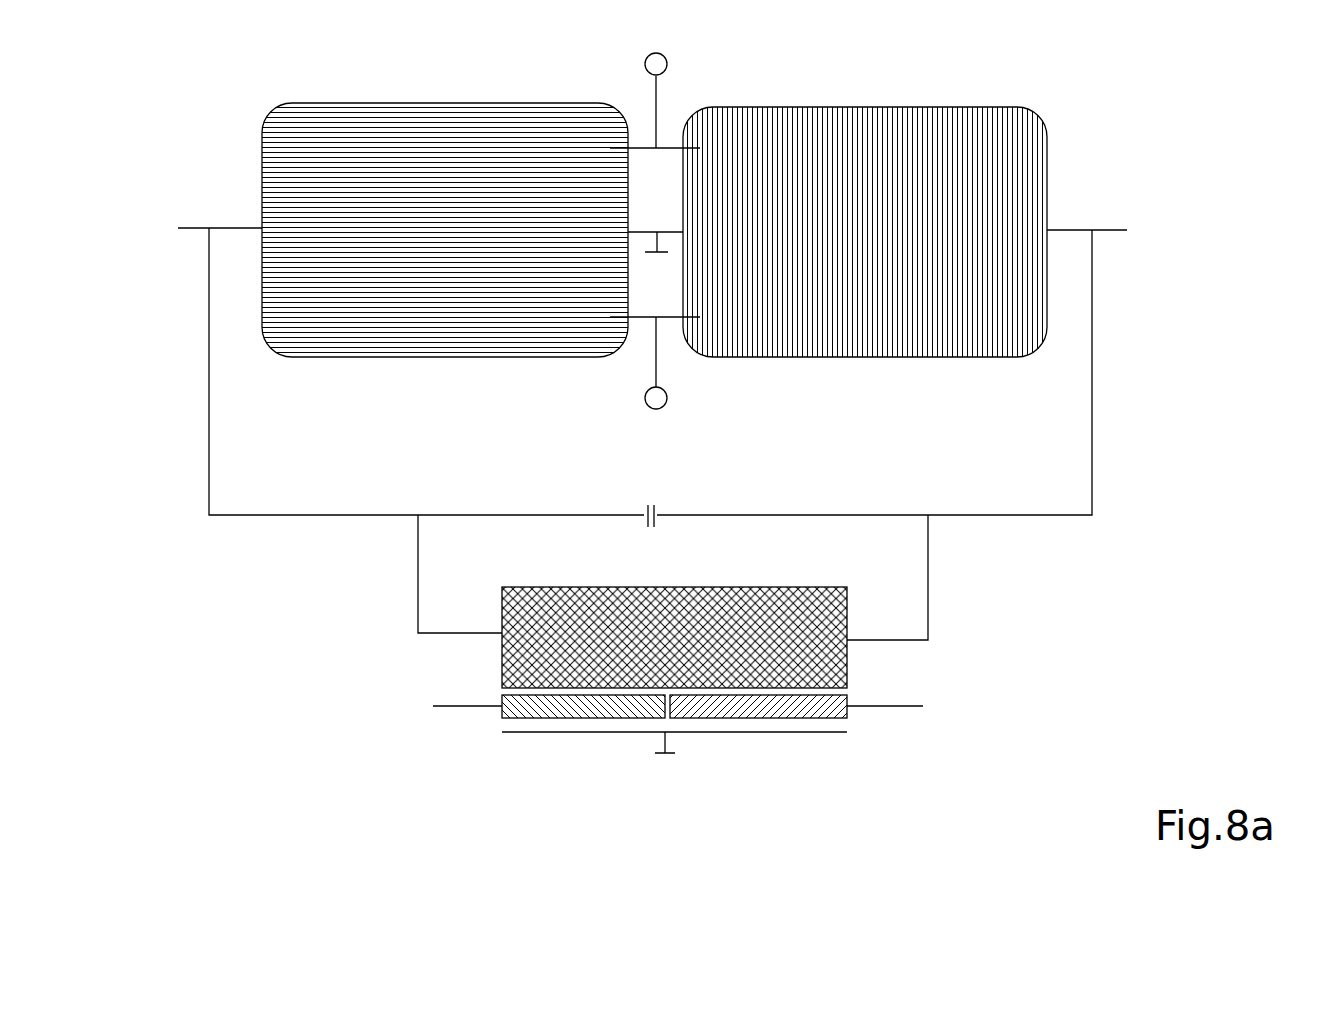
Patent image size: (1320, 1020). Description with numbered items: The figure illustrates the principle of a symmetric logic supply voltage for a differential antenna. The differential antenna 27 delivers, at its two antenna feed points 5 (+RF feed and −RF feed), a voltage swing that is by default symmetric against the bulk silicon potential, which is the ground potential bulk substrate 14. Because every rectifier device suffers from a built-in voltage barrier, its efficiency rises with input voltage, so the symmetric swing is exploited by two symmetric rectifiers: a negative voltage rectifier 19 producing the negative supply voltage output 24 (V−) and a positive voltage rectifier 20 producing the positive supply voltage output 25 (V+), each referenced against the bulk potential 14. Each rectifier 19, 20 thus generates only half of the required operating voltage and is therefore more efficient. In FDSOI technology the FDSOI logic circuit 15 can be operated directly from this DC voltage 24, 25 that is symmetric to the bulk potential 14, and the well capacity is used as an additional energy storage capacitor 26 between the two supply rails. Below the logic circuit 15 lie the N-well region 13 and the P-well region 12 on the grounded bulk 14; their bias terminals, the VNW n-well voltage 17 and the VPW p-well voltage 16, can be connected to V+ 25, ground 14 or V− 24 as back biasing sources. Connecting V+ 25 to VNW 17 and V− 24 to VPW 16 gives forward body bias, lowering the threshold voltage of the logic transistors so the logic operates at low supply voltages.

The antenna feed points 5 is at (648, 68).
The P-well region 12 is at (793, 713).
The N-well region 13 is at (597, 717).
The ground potential bulk substrate 14 is at (657, 240).
The FDSOI logic circuit 15 is at (657, 620).
The VPW p-well voltage 16 is at (906, 701).
The VNW n-well voltage 17 is at (449, 698).
The negative voltage rectifier 19 is at (440, 237).
The positive voltage rectifier 20 is at (993, 248).
The negative supply voltage output 24 is at (195, 248).
The positive supply voltage output 25 is at (1115, 244).
The energy storage capacitor 26 is at (644, 510).
The differential antenna 27 is at (681, 106).